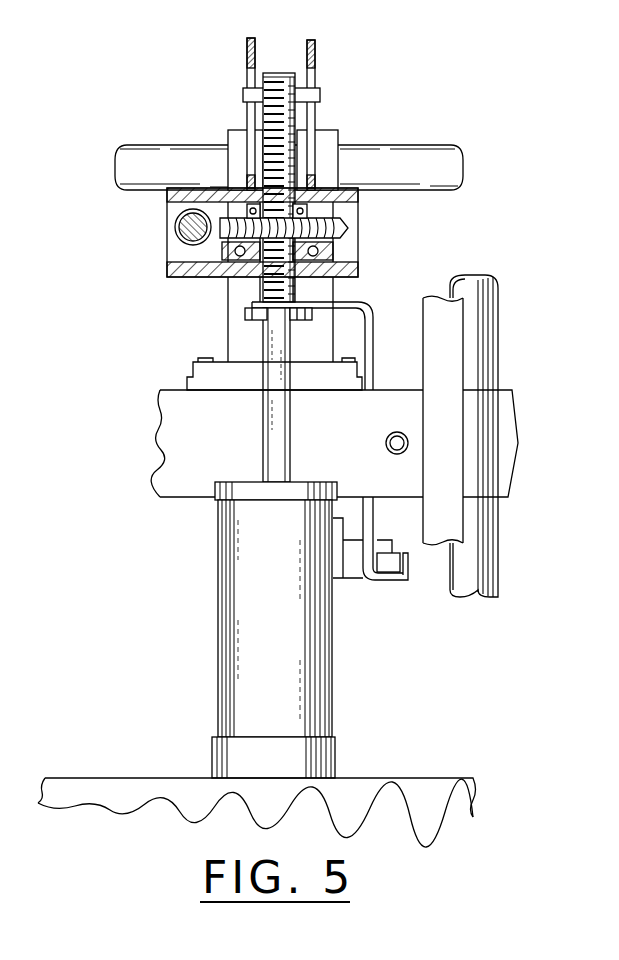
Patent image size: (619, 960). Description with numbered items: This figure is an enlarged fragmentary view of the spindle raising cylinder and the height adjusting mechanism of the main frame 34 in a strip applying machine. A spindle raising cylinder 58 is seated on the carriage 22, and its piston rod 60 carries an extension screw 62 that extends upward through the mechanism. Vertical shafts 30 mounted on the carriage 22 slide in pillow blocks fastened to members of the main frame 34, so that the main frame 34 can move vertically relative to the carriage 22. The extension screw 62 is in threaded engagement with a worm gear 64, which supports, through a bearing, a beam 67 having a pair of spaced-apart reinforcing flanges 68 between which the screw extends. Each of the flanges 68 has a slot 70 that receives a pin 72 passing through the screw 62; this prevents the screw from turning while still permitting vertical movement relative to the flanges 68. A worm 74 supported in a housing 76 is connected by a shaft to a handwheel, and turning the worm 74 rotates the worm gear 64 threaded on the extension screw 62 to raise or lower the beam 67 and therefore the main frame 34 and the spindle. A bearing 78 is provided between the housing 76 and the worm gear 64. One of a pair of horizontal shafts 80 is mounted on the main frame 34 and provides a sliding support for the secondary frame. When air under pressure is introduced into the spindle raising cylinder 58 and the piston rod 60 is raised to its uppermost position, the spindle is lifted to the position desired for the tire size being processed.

The carriage 22 is at (428, 795).
The vertical shafts 30 is at (482, 572).
The main frame 34 is at (451, 357).
The spindle raising cylinder 58 is at (322, 713).
The piston rod 60 is at (263, 340).
The extension screw 62 is at (296, 122).
The worm gear 64 is at (348, 230).
The beam 67 is at (332, 172).
The reinforcing flanges 68 is at (257, 28).
The slot 70 is at (247, 127).
The pin 72 is at (320, 93).
The worm 74 is at (175, 229).
The housing 76 is at (167, 270).
The bearing 78 is at (332, 250).
The horizontal shaft 80 is at (162, 153).